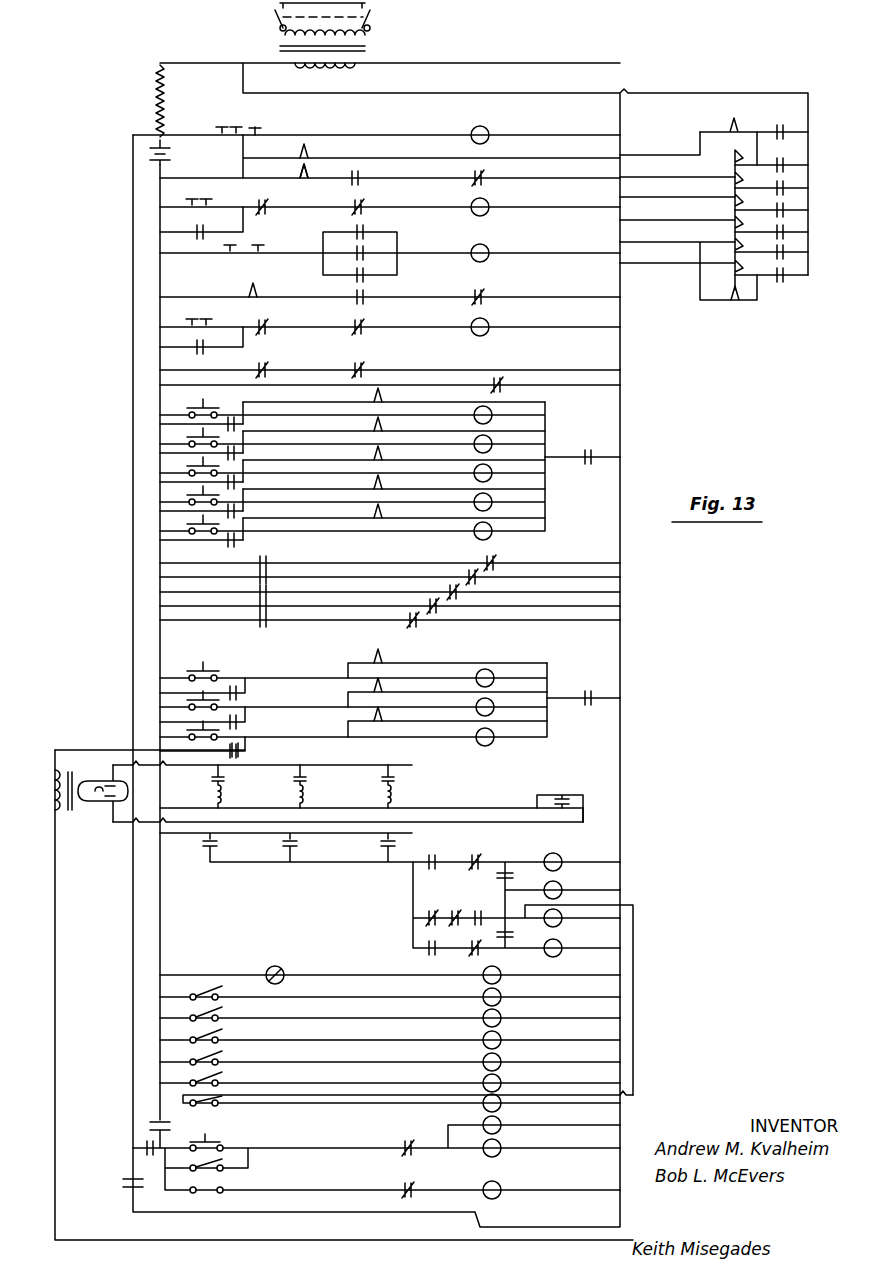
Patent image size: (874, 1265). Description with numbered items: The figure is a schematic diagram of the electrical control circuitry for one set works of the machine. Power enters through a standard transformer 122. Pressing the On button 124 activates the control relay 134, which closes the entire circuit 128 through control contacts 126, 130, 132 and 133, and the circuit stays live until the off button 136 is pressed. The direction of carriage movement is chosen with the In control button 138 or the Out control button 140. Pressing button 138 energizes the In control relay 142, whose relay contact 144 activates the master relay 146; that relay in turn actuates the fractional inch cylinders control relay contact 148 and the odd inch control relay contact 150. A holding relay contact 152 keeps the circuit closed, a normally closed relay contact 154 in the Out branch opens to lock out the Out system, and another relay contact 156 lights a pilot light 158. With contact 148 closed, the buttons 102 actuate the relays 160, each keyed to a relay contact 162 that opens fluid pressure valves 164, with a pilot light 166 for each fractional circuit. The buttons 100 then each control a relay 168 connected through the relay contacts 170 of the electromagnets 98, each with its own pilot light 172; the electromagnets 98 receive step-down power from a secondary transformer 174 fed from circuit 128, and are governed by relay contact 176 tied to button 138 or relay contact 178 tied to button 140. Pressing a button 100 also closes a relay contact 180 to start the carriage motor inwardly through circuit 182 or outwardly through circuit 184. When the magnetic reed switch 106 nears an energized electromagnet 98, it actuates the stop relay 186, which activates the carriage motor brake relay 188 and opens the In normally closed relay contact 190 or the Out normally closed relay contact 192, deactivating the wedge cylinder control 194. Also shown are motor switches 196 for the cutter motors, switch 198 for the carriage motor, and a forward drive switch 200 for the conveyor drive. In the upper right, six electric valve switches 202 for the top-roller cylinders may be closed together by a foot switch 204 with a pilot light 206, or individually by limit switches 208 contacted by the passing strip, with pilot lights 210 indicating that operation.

The electromagnets 98 is at (220, 790).
The buttons 100 is at (202, 666).
The buttons 102 is at (197, 404).
The magnetic reed switch 106 is at (280, 968).
The transformer 122 is at (378, 50).
The On button 124 is at (218, 130).
The control contact 126 is at (168, 159).
The circuit 128 is at (171, 276).
The control contact 130 is at (140, 1142).
The control contact 132 is at (126, 1184).
The control contact 133 is at (150, 1121).
The control relay 134 is at (485, 129).
The off button 136 is at (256, 128).
The In control button 138 is at (208, 198).
The Out control button 140 is at (208, 324).
The In control relay 142 is at (485, 204).
The relay contact 144 is at (396, 235).
The master relay 146 is at (485, 252).
The fractional inch cylinders control relay contact 148 is at (600, 443).
The odd inch control relay contact 150 is at (600, 683).
The holding relay contact 152 is at (235, 240).
The normally closed relay contact 154 is at (352, 339).
The relay contact 156 is at (369, 176).
The pilot light 158 is at (310, 168).
The relays 160 is at (474, 440).
The relay contacts 162 is at (267, 588).
The fluid pressure valves 164 is at (466, 580).
The pilot light 166 is at (376, 434).
The relay 168 is at (496, 692).
The relay contacts 170 is at (367, 764).
The pilot light 172 is at (378, 690).
The secondary transformer 174 is at (98, 814).
The relay contact 176 is at (560, 794).
The relay contact 178 is at (566, 823).
The relay contact 180 is at (282, 847).
The circuit 182 is at (562, 854).
The circuit 184 is at (560, 942).
The stop relay 186 is at (493, 969).
The carriage motor brake relay 188 is at (506, 937).
The In normally closed relay contact 190 is at (257, 380).
The Out normally closed relay contact 192 is at (364, 370).
The wedge cylinder control 194 is at (502, 379).
The motor switches 196 is at (156, 1007).
The switch 198 is at (166, 1084).
The forward drive switch 200 is at (212, 1138).
The electric valve switches 202 is at (734, 226).
The foot switch 204 is at (780, 128).
The pilot light 206 is at (716, 129).
The limit switch 208 is at (808, 205).
The pilot lights 210 is at (734, 308).